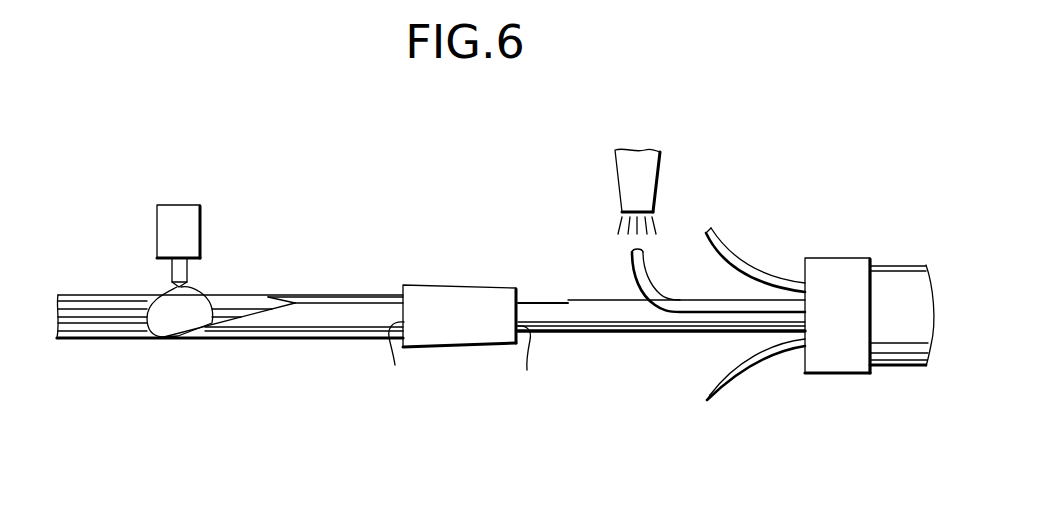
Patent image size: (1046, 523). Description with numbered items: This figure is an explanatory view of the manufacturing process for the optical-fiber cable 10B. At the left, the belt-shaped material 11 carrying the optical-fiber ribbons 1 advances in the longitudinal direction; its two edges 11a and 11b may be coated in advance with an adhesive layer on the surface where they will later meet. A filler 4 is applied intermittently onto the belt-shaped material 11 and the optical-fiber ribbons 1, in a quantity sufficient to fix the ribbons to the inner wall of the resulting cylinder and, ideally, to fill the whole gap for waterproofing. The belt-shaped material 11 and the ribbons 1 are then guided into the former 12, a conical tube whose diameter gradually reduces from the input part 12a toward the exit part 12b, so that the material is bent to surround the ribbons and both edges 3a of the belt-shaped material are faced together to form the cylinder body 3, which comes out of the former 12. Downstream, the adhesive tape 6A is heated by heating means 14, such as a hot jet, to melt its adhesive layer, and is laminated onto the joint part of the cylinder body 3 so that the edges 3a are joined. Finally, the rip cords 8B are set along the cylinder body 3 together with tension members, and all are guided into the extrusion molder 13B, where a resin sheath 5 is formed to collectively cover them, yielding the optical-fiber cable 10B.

The optical-fiber ribbons 1 is at (75, 298).
The belt-shaped material 11 is at (73, 333).
The edge of the belt-shaped material 11a is at (118, 343).
The edge of the belt-shaped material 11b is at (118, 297).
The filler 4 is at (192, 315).
The former 12 is at (445, 302).
The input part 12a is at (390, 363).
The exit part 12b is at (531, 366).
The cylinder body 3 is at (585, 318).
The edges of the belt-shaped material 3a is at (538, 300).
The adhesive tape 6A is at (633, 275).
The heating means 14 is at (638, 153).
The rip cords 8B is at (747, 263).
The extrusion molder 13B is at (833, 270).
The sheath 5 is at (897, 282).
The optical-fiber cable 10B is at (895, 376).